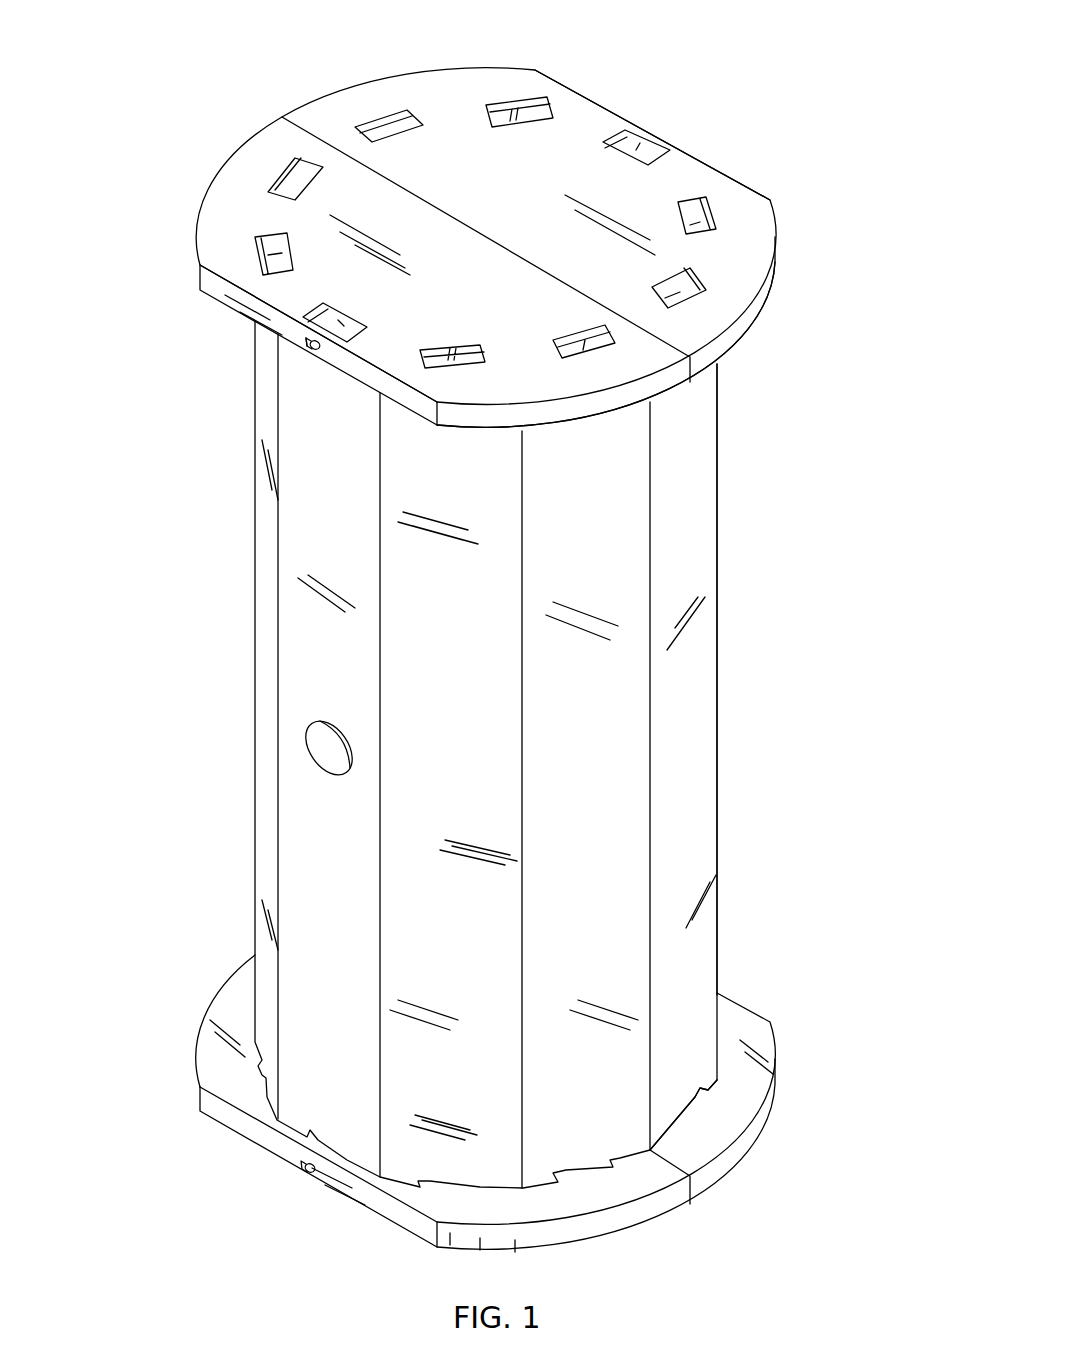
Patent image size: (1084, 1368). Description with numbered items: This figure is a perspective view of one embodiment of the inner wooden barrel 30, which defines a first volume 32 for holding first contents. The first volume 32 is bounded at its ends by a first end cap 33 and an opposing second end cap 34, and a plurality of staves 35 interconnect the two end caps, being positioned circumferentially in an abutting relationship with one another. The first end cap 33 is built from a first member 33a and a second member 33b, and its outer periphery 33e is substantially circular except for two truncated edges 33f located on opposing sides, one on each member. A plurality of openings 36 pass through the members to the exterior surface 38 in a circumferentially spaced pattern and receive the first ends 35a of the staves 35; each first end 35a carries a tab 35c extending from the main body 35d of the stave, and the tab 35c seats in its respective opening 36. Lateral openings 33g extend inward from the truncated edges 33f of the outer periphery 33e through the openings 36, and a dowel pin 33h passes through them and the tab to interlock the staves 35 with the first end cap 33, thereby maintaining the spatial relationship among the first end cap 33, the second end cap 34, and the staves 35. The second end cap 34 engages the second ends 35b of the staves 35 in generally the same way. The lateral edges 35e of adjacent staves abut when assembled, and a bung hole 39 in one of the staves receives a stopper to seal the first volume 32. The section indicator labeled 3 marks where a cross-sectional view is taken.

The inner wooden barrel 30 is at (147, 70).
The first volume 32 is at (360, 744).
The first end cap 33 is at (806, 234).
The first member 33a is at (495, 208).
The second member 33b is at (430, 302).
The outer periphery 33e is at (560, 415).
The truncated edges 33f is at (585, 92).
The lateral openings 33g is at (320, 350).
The dowel pin 33h is at (305, 343).
The second end cap 34 is at (806, 1067).
The staves 35 is at (631, 716).
The first end 35a is at (688, 410).
The second end 35b is at (682, 1088).
The tab 35c is at (290, 257).
The main body 35d is at (572, 765).
The lateral edges 35e is at (650, 513).
The openings 36 is at (314, 138).
The exterior surface 38 is at (445, 95).
The bung hole 39 is at (325, 770).
The section line 3- 3 is at (676, 138).